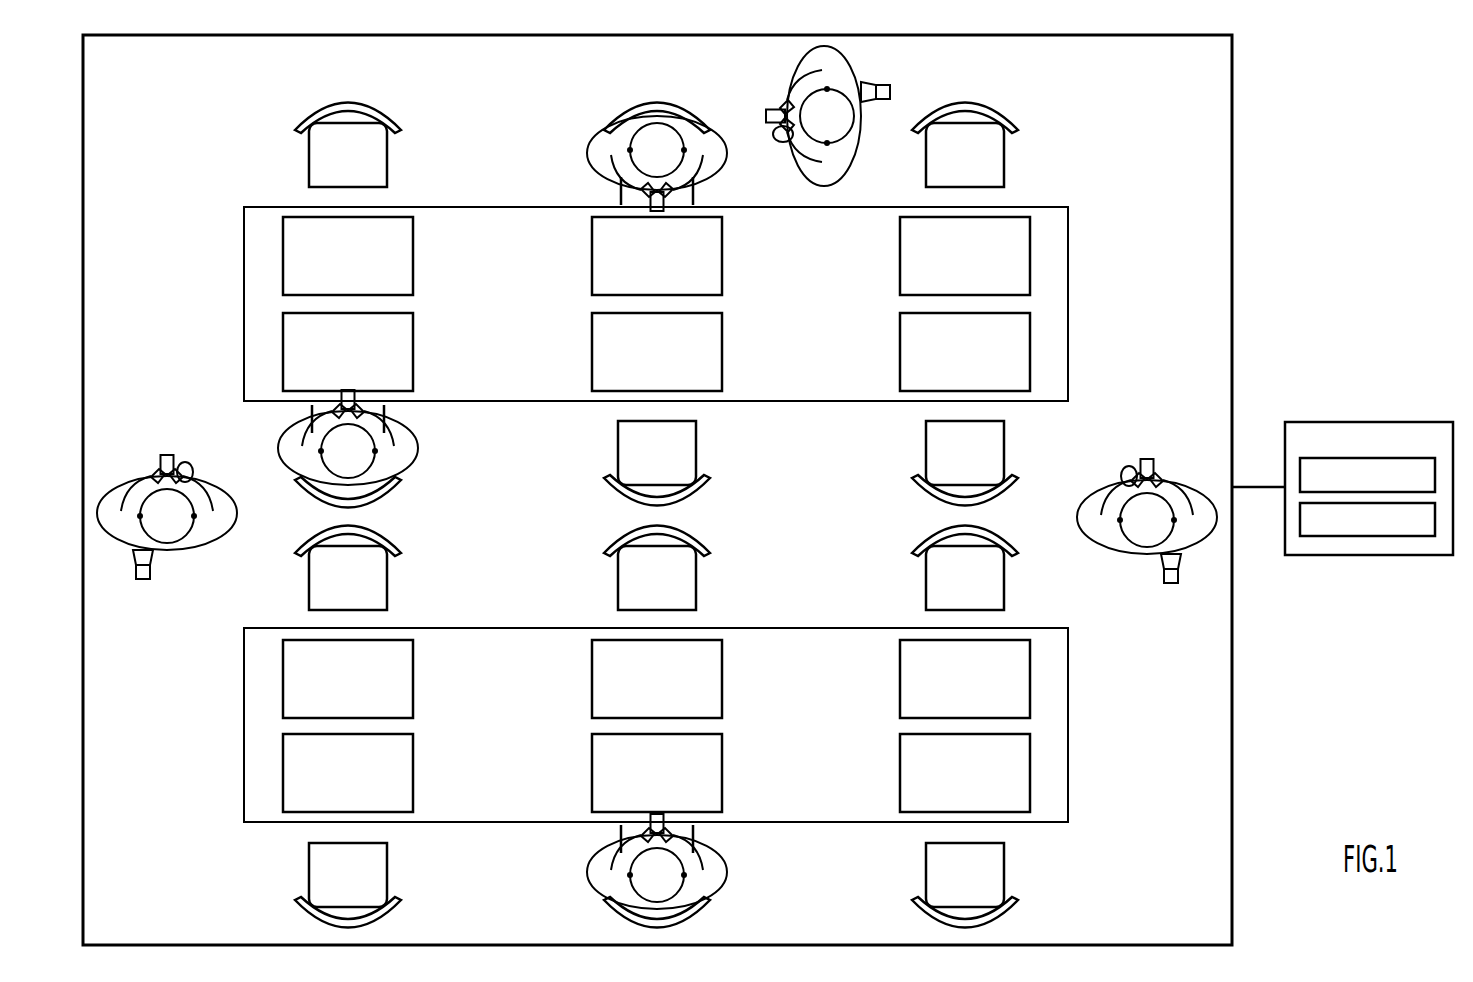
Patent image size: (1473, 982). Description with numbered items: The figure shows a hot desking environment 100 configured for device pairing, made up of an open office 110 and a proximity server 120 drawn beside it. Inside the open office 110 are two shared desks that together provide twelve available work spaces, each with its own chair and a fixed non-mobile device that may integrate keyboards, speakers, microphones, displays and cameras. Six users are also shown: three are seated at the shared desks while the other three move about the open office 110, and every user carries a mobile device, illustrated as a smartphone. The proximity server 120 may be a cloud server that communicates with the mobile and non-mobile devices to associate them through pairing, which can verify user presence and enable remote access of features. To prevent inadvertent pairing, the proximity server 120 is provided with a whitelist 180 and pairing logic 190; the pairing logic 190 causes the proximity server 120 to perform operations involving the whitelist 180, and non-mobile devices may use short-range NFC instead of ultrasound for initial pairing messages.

The hot desking environment 100 is at (1383, 99).
The open office 110 is at (1232, 172).
The proximity server 120 is at (1347, 422).
The whitelist 180 is at (1300, 478).
The pairing logic 190 is at (1300, 518).